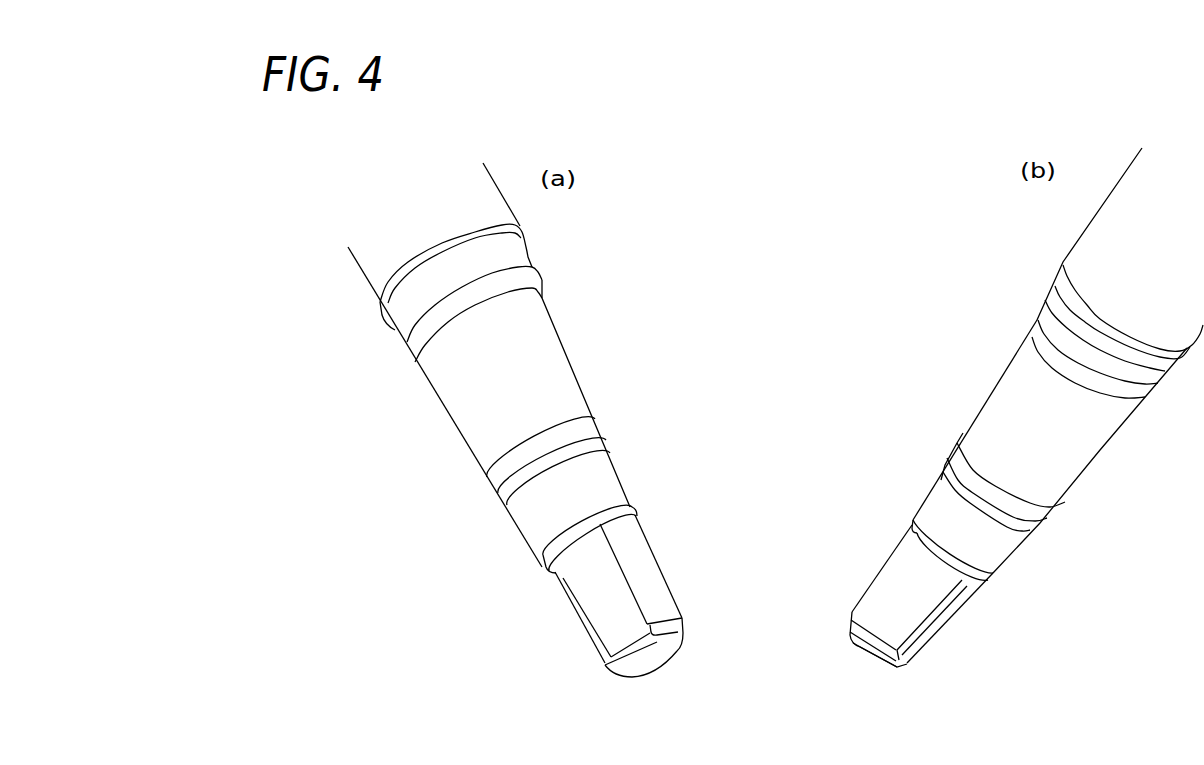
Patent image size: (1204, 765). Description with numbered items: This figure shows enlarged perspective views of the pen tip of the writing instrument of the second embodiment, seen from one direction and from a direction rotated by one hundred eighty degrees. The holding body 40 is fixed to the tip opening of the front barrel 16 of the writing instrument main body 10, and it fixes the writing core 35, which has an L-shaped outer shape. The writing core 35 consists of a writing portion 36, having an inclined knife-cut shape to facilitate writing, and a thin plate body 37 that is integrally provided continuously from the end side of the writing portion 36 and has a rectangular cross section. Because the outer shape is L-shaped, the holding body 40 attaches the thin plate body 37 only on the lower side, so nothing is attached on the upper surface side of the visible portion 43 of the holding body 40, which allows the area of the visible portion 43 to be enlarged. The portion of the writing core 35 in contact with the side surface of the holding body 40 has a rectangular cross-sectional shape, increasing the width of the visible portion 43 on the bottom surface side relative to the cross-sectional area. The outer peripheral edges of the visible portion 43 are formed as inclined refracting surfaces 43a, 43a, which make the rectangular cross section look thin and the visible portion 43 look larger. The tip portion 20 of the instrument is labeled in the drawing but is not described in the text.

The writing instrument main body 10 is at (506, 224).
The front barrel 16 is at (575, 377).
The distal end portion 20 is at (753, 616).
The holding body 40 is at (566, 604).
The visible portion 43 is at (613, 572).
The inclined refracting surface 43a is at (589, 637).
The writing portion 36 is at (635, 667).
The writing core 35 is at (665, 670).
The thin plate body 37 is at (950, 618).